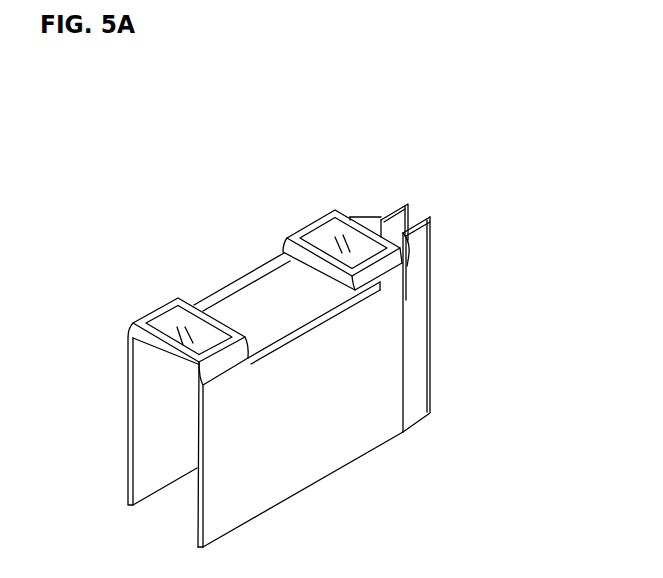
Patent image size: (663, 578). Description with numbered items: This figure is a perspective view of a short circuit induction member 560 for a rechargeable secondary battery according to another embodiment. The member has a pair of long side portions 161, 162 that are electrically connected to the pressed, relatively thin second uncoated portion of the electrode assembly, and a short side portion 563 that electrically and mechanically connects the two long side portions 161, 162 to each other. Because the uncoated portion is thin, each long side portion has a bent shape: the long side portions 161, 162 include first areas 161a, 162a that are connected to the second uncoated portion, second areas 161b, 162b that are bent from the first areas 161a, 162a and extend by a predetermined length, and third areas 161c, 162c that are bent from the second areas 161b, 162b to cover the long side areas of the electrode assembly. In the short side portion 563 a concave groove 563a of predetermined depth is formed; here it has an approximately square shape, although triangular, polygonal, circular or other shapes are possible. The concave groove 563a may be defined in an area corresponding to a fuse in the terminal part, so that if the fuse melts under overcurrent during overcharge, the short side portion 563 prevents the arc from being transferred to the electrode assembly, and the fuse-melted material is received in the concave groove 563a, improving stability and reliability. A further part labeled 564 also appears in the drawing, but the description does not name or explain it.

The short circuit induction member 560 is at (167, 178).
The short side portion 563 is at (207, 317).
The concave groove 563a is at (165, 327).
The connecting bar 564 is at (250, 300).
The long side portion 162 is at (438, 139).
The first area 162a is at (386, 218).
The second area 162b is at (368, 218).
The third area 162c is at (263, 264).
The long side portion 161 is at (522, 232).
The first area 161a is at (422, 240).
The second area 161b is at (406, 265).
The third area 161c is at (395, 312).